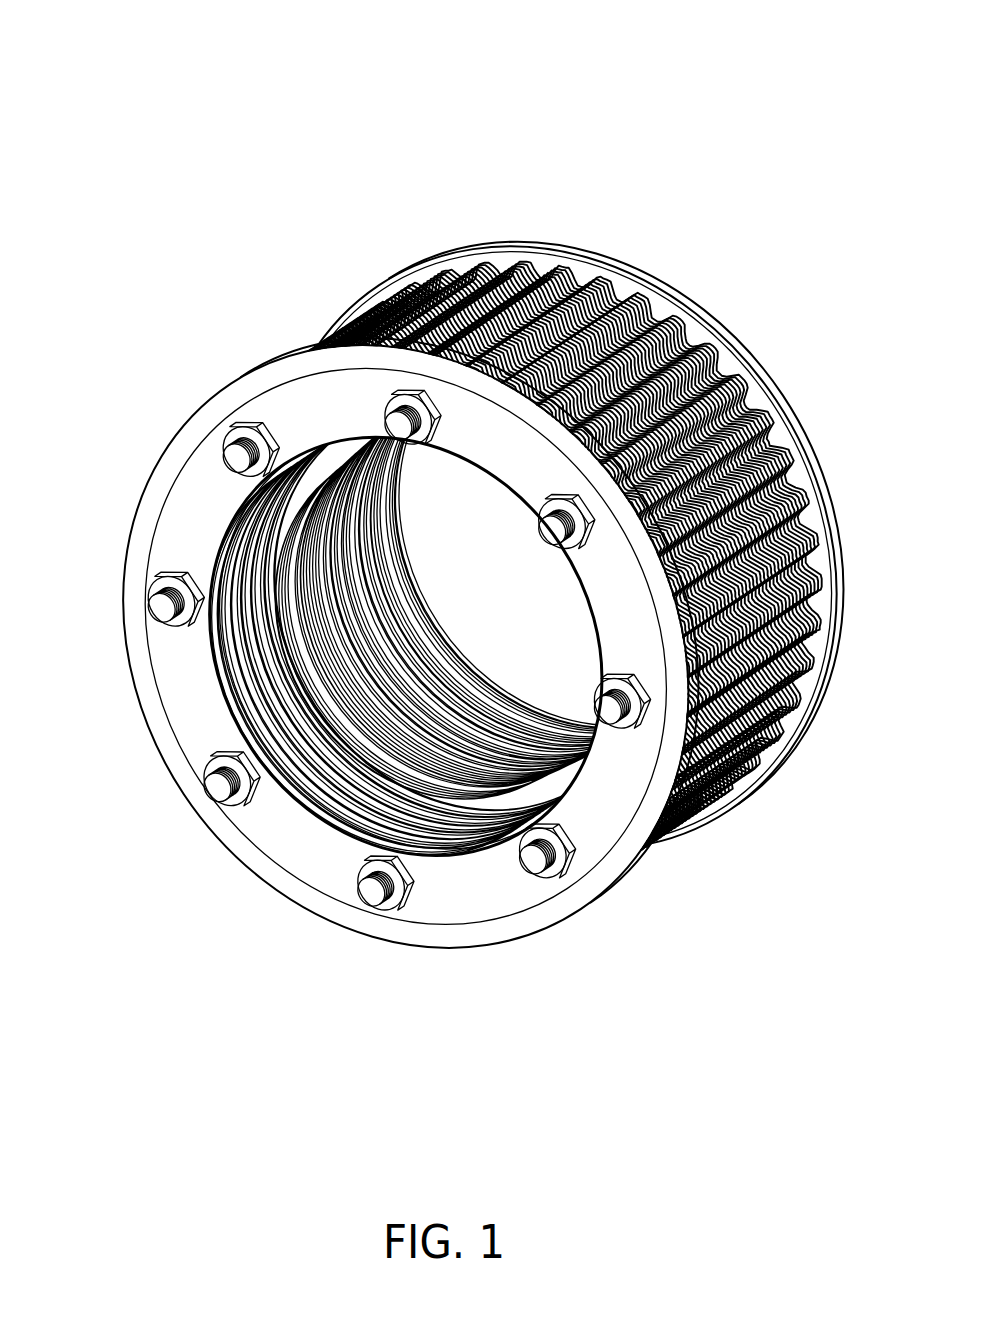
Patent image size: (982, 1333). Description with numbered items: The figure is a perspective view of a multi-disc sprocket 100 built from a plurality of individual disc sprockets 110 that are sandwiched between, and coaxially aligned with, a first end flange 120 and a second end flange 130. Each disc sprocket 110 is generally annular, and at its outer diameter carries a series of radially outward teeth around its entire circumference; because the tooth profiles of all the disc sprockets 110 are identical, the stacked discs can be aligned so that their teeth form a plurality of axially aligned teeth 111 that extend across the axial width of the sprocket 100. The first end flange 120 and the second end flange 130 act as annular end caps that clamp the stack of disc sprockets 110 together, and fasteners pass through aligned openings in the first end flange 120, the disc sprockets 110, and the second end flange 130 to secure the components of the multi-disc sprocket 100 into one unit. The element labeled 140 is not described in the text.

The multi-disc sprocket 100 is at (152, 56).
The disc sprockets 110 is at (333, 763).
The axially aligned teeth 111 is at (720, 355).
The first end flange 120 is at (307, 402).
The second end flange 130 is at (837, 512).
The fastener bolt and nut 140 is at (157, 612).